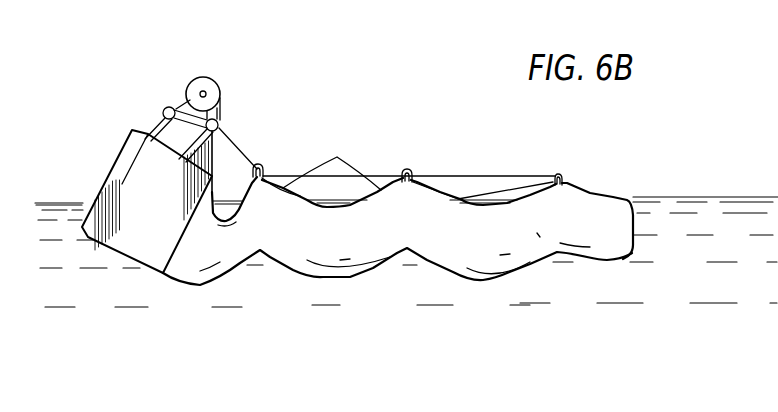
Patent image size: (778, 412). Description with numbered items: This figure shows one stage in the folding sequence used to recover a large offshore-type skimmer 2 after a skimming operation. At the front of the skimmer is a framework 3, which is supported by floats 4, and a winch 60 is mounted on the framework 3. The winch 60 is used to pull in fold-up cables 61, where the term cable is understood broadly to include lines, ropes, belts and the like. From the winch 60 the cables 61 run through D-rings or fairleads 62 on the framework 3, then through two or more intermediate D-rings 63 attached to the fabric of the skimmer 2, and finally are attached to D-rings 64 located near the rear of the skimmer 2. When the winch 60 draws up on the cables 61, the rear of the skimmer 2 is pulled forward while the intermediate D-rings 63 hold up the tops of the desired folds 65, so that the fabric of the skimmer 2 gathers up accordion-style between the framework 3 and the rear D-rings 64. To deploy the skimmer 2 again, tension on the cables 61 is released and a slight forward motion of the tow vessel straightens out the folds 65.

The skimmer 2 is at (610, 196).
The framework 3 is at (165, 107).
The floats 4 is at (142, 172).
The winch 60 is at (213, 80).
The fold-up cables 61 is at (241, 147).
The D-rings or fairleads 62 is at (218, 121).
The intermediate D-rings 63 is at (263, 170).
The D-rings near the rear of the skimmer 64 is at (560, 175).
The folds 65 is at (337, 157).